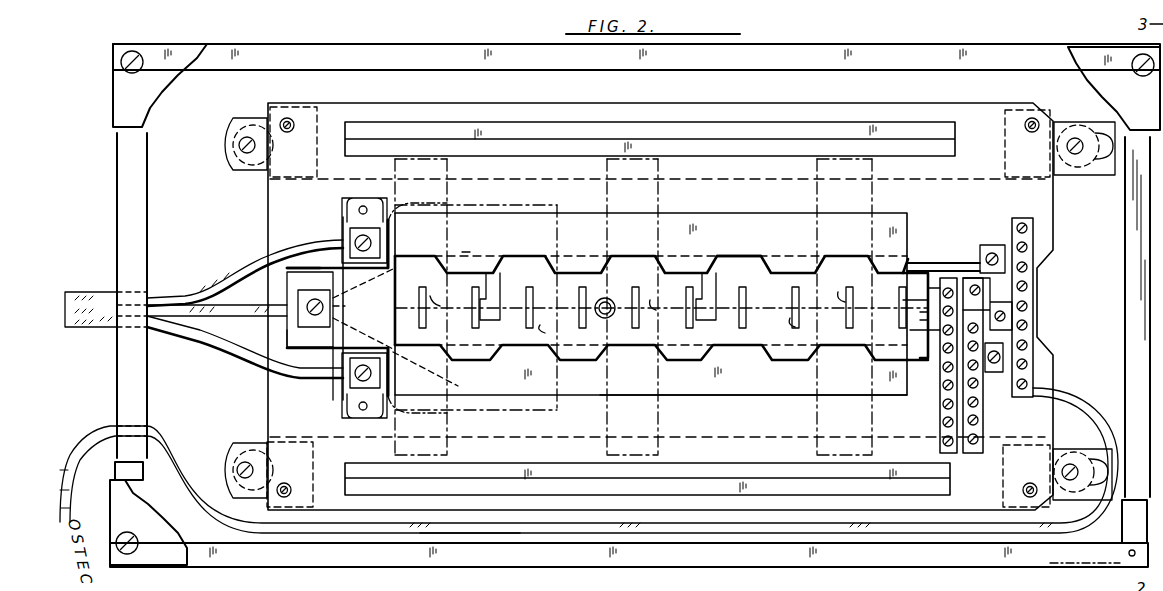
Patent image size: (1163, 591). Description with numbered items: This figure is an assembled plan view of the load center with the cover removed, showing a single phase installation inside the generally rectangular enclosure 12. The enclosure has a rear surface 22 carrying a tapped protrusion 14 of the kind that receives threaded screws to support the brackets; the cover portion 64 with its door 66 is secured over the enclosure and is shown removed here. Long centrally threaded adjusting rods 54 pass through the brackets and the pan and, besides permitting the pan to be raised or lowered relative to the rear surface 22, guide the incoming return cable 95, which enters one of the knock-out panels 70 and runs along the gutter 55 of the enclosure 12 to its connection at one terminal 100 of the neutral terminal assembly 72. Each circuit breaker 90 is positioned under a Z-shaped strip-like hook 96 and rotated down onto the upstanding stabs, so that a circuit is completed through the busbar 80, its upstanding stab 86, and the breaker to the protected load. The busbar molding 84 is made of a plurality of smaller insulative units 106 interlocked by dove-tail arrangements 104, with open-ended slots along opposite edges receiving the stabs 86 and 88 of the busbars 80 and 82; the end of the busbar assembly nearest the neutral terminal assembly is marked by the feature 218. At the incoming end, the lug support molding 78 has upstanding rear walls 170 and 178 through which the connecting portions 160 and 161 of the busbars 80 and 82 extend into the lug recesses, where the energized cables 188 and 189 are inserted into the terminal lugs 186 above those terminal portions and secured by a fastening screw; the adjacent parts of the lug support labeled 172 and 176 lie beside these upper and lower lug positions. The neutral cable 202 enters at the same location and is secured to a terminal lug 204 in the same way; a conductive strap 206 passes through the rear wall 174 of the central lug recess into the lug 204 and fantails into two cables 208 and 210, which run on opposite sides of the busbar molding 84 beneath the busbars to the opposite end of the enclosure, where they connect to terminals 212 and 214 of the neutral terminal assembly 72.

The enclosure 12 is at (922, 56).
The tapped protrusion 14 is at (992, 584).
The rear surface 22 is at (1105, 326).
The adjusting rods 54 is at (285, 121).
The gutters 55 is at (462, 536).
The cover portion 64 is at (345, 590).
The door 66 is at (705, 579).
The knock-out panels 70 is at (117, 424).
The neutral terminal assembly 72 is at (975, 454).
The lug support molding 78 is at (286, 333).
The busbar 80 is at (725, 400).
The busbar 82 is at (734, 213).
The busbar molding 84 is at (648, 236).
The upstanding stab 86 is at (636, 300).
The stab 88 is at (480, 330).
The circuit breaker 90 is at (607, 202).
The return cable 95 is at (84, 433).
The Z-shaped strip-like hook 96 is at (398, 122).
The terminal 100 is at (1025, 373).
The dove-tail arrangements 104 is at (486, 303).
The insulative unit 106 is at (729, 256).
The terminal portion 160 is at (343, 233).
The terminal portion 161 is at (334, 392).
The upstanding rear wall 170 is at (398, 262).
The upper bracket arm 172 is at (290, 266).
The rear wall 174 is at (328, 280).
The lower main lug 176 is at (322, 356).
The upstanding rear wall 178 is at (392, 378).
The terminal lugs 186 is at (417, 308).
The energized cable 188 is at (220, 348).
The energized cable 189 is at (203, 278).
The neutral cable 202 is at (268, 306).
The terminal lug 204 is at (272, 276).
The conductive strap 206 is at (334, 310).
The cable 208 is at (442, 373).
The cable 210 is at (462, 252).
The terminal 212 is at (990, 398).
The terminal 214 is at (987, 245).
The bus bar end tab 218 is at (925, 318).